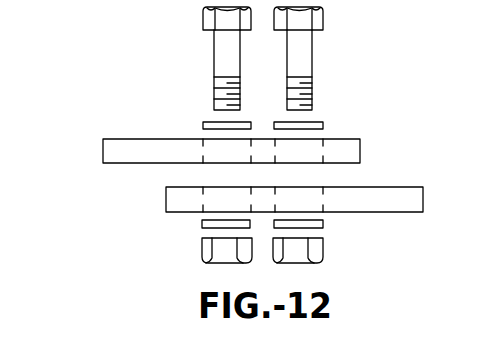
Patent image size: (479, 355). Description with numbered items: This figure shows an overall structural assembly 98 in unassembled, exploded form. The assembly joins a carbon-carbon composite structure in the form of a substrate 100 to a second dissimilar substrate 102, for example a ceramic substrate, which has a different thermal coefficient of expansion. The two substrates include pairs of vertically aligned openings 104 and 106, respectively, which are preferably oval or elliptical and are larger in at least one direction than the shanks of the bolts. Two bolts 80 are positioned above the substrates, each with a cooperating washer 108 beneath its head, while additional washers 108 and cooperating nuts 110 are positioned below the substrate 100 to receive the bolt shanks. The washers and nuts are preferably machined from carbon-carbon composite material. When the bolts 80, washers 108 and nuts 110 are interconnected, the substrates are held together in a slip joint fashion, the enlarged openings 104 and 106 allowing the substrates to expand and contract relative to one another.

The bolt 80 is at (220, 52).
The structural assembly 98 is at (378, 92).
The substrate 100 is at (168, 196).
The second dissimilar substrate 102 is at (137, 145).
The openings 104 is at (202, 190).
The openings 106 is at (203, 140).
The washers 108 is at (207, 123).
The nuts 110 is at (208, 248).